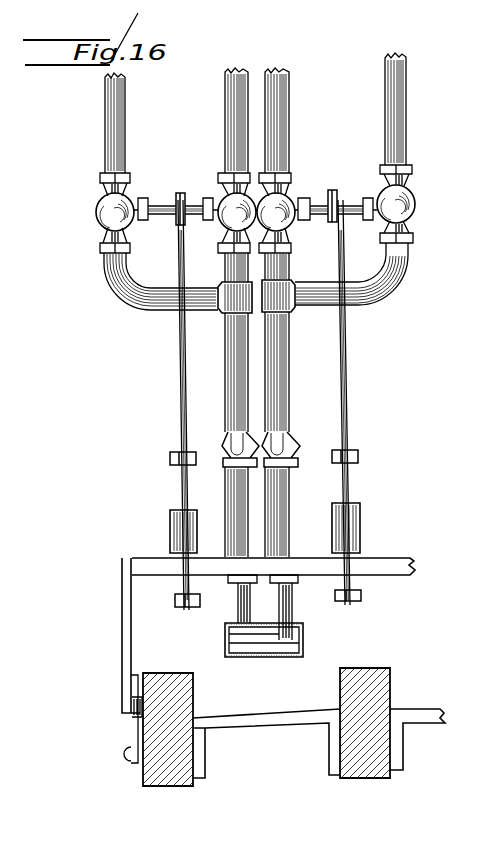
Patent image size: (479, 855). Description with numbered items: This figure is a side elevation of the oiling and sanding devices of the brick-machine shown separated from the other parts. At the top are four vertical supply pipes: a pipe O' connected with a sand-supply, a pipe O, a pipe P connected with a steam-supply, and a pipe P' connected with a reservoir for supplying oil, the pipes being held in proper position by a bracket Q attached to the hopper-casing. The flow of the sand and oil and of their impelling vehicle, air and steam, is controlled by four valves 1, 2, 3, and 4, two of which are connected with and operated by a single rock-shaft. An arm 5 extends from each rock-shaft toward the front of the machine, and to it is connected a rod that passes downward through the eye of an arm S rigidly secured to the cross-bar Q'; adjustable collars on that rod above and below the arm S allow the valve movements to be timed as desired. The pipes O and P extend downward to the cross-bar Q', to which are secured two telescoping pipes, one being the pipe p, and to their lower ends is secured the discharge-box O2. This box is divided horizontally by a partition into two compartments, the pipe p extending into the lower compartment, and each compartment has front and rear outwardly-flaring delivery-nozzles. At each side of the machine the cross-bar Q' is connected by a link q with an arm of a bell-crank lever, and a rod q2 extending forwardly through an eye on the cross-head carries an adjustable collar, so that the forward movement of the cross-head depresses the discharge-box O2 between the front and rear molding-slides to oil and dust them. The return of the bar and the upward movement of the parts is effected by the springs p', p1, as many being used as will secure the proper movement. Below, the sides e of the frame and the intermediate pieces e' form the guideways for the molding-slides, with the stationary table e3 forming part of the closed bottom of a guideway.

The sand-supply pipe O' is at (89, 123).
The pipe O is at (219, 345).
The steam-supply pipe P is at (288, 354).
The oil-supply pipe P' is at (413, 154).
The valve 1 is at (96, 211).
The valve 2 is at (222, 222).
The valve 3 is at (290, 220).
The valve 4 is at (413, 218).
The arm 5 is at (250, 195).
The bracket Q is at (254, 315).
The cross-bar Q' is at (273, 546).
The telescoping pipe p is at (260, 537).
The spring p1 is at (174, 598).
The spring p' is at (366, 601).
The arm S is at (198, 555).
The discharge-box O2 is at (231, 632).
The link q is at (126, 636).
The rod q2 is at (124, 754).
The frame side e is at (168, 713).
The intermediate piece e' is at (365, 708).
The stationary table e3 is at (276, 728).